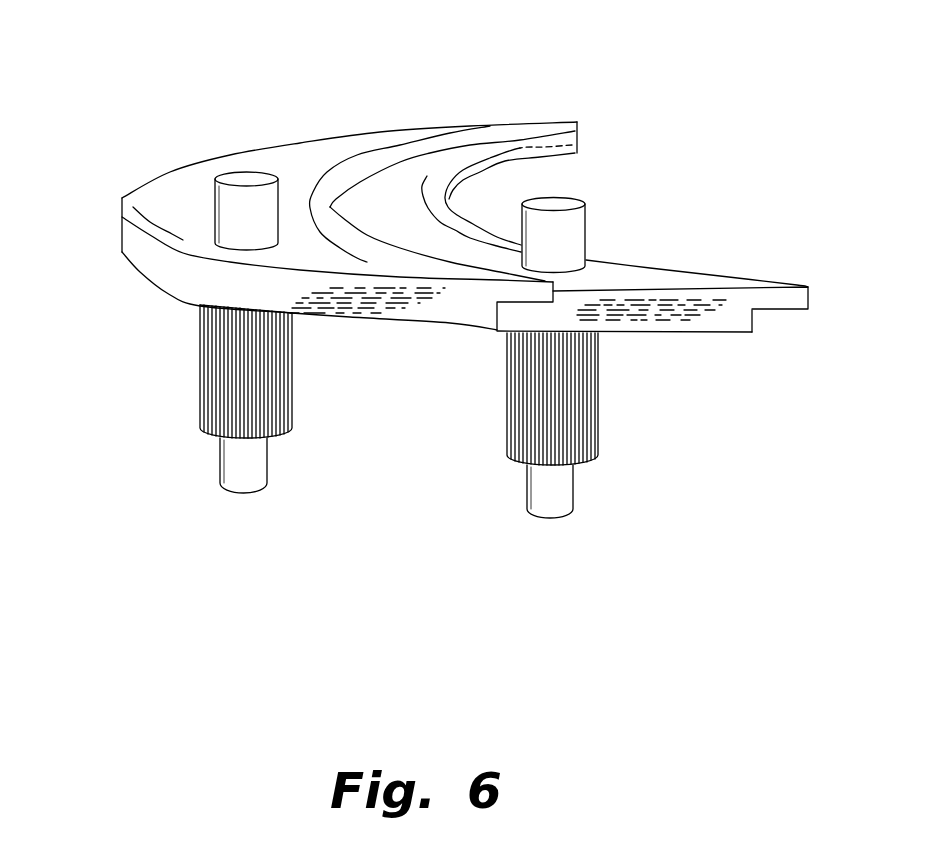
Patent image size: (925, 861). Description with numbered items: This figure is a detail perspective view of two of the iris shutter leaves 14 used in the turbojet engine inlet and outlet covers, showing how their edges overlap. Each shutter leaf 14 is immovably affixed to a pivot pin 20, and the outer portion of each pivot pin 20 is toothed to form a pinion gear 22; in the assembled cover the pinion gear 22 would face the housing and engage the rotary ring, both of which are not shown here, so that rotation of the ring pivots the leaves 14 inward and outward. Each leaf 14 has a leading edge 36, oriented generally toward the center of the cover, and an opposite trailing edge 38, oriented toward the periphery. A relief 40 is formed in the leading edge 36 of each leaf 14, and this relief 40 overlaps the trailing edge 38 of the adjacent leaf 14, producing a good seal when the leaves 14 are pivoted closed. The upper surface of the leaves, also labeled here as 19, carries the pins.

The shutter leaf 14 is at (312, 138).
The top surface of base plate 19 is at (272, 144).
The pivot pin 20 is at (213, 197).
The pinion gear 22 is at (508, 417).
The leading edge 36 is at (510, 168).
The trailing edge 38 is at (121, 240).
The relief 40 is at (497, 330).